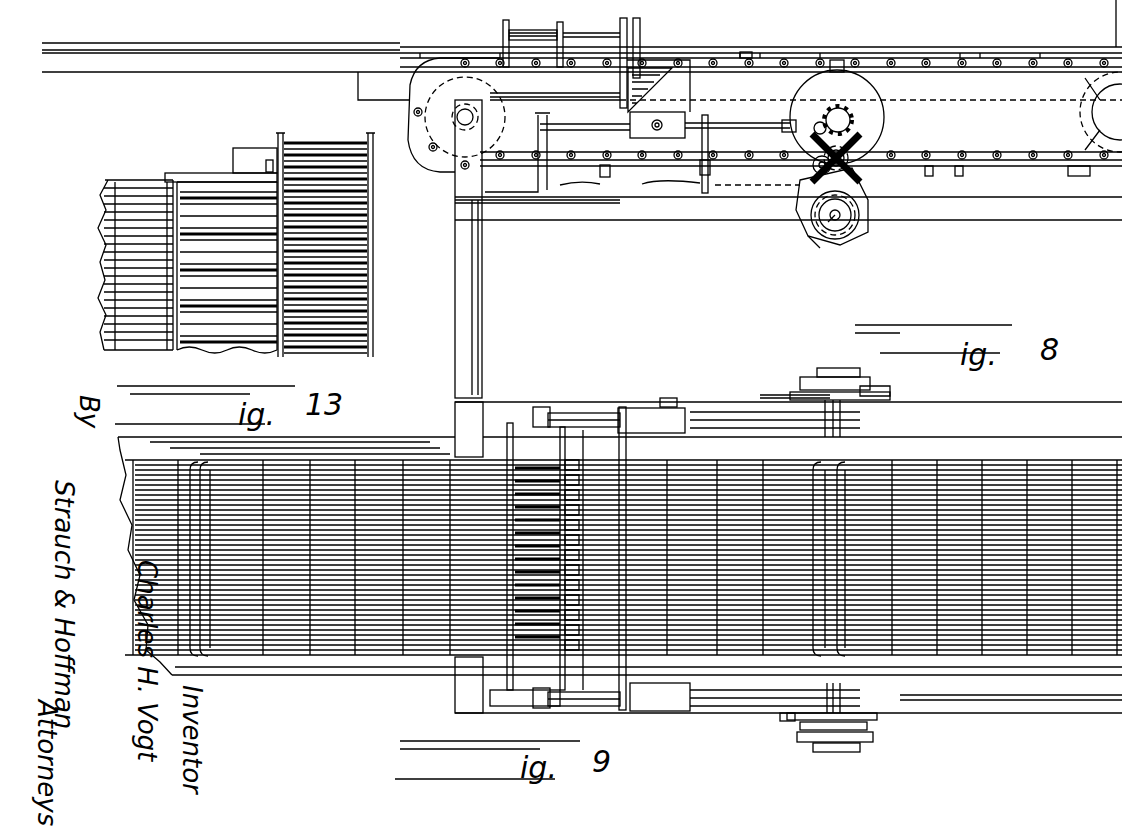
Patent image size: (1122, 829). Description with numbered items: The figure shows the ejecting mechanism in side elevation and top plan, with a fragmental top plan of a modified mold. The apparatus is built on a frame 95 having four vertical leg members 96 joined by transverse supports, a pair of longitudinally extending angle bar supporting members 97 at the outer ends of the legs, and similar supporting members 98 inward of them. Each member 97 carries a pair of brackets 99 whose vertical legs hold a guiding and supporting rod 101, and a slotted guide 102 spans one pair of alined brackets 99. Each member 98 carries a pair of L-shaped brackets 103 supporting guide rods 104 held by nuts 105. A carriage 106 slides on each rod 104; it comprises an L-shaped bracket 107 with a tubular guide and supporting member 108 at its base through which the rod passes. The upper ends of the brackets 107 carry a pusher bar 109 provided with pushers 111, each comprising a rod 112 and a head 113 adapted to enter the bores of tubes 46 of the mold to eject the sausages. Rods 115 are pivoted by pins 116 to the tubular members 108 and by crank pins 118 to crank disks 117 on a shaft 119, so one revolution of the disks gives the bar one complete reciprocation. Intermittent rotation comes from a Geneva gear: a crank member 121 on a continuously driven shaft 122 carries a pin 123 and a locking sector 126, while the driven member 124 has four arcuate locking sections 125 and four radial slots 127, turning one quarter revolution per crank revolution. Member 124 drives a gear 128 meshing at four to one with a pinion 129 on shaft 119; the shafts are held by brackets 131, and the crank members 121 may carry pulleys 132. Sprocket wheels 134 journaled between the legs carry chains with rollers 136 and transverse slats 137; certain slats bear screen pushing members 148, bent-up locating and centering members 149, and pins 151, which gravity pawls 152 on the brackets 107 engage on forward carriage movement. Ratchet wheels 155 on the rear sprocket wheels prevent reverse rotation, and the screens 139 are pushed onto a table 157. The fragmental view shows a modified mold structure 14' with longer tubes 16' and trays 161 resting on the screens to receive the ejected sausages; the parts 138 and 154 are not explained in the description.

In FIG. 8, the tube 46 is at (503, 30).
In FIG. 9, the tube 46 is at (497, 428).
In FIG. 8, the frame 95 is at (943, 208).
In FIG. 8, the vertical leg members 96 is at (483, 257).
In FIG. 8, the angle bar supporting members 97 is at (893, 82).
In FIG. 9, the angle bar supporting members 97 is at (917, 440).
In FIG. 8, the supporting members 98 is at (670, 207).
In FIG. 9, the supporting members 98 is at (1027, 407).
In FIG. 8, the brackets 99 is at (520, 13).
In FIG. 9, the brackets 99 is at (490, 445).
In FIG. 8, the guiding and supporting rod 101 is at (430, 145).
In FIG. 9, the guiding and supporting rod 101 is at (570, 425).
In FIG. 9, the slotted guide 102 is at (505, 465).
In FIG. 8, the L-shaped brackets 103 is at (630, 187).
In FIG. 9, the L-shaped brackets 103 is at (540, 400).
In FIG. 8, the guide rods 104 is at (560, 130).
In FIG. 9, the guide rods 104 is at (580, 445).
In FIG. 8, the nuts 105 is at (533, 115).
In FIG. 9, the nuts 105 is at (533, 410).
In FIG. 8, the carriage 106 is at (688, 105).
In FIG. 9, the carriage 106 is at (680, 403).
In FIG. 8, the L-shaped bracket 107 is at (668, 100).
In FIG. 8, the tubular guide and supporting member 108 is at (590, 160).
In FIG. 9, the pusher bar 109 is at (620, 490).
In FIG. 8, the pushers 111 is at (573, 20).
In FIG. 9, the pushers 111 is at (612, 512).
In FIG. 9, the rod 112 is at (540, 685).
In FIG. 9, the head 113 is at (503, 655).
In FIG. 8, the rods 115 is at (745, 125).
In FIG. 9, the rods 115 is at (760, 400).
In FIG. 8, the pins 116 is at (660, 120).
In FIG. 8, the crank disks 117 is at (835, 72).
In FIG. 9, the crank disks 117 is at (883, 415).
In FIG. 8, the crank pins 118 is at (890, 108).
In FIG. 9, the crank pins 118 is at (858, 713).
In FIG. 8, the shaft 119 is at (850, 112).
In FIG. 8, the crank member 121 is at (822, 242).
In FIG. 9, the crank member 121 is at (860, 375).
In FIG. 8, the shaft 122 is at (808, 214).
In FIG. 8, the pin 123 is at (750, 156).
In FIG. 8, the driven member 124 is at (880, 150).
In FIG. 9, the driven member 124 is at (815, 378).
In FIG. 8, the arcuate locking sections 125 is at (880, 174).
In FIG. 8, the locking sector 126 is at (827, 232).
In FIG. 8, the radially extending slots 127 is at (866, 210).
In FIG. 8, the gear 128 is at (785, 135).
In FIG. 8, the pinion 129 is at (820, 118).
In FIG. 9, the brackets 131 is at (833, 428).
In FIG. 8, the pulleys 132 is at (860, 243).
In FIG. 9, the pulleys 132 is at (860, 745).
In FIG. 8, the sprocket wheels 134 is at (515, 150).
In FIG. 8, the rollers 136 is at (988, 157).
In FIG. 8, the slats 137 is at (745, 52).
In FIG. 9, the bar 138 is at (1043, 480).
In FIG. 8, the screens 139 is at (262, 34).
In FIG. 13, the screens 139 is at (130, 203).
In FIG. 8, the screen pushing members 148 is at (818, 47).
In FIG. 9, the screen pushing members 148 is at (817, 467).
In FIG. 8, the screen locating and centering members 149 is at (975, 50).
In FIG. 9, the screen locating and centering members 149 is at (977, 457).
In FIG. 8, the pins 151 is at (1010, 168).
In FIG. 8, the gravity pawls 152 is at (660, 62).
In FIG. 8, the hub 154 is at (1040, 158).
In FIG. 8, the ratchet wheels 155 is at (410, 100).
In FIG. 8, the table 157 is at (258, 74).
In FIG. 9, the table 157 is at (363, 445).
In FIG. 13, the trays 161 is at (193, 253).
In FIG. 13, the tray 14' is at (346, 245).
In FIG. 13, the tray 16' is at (294, 267).